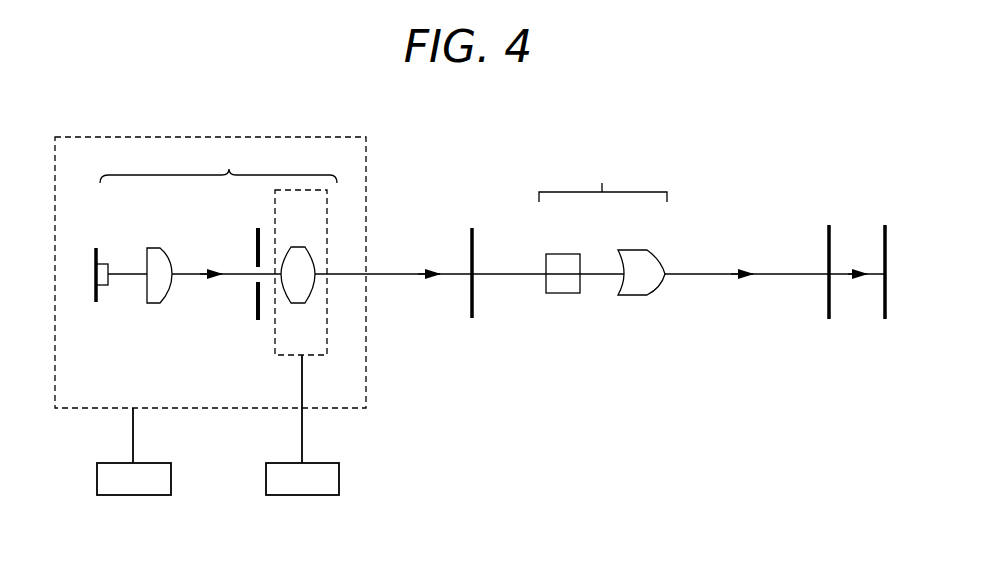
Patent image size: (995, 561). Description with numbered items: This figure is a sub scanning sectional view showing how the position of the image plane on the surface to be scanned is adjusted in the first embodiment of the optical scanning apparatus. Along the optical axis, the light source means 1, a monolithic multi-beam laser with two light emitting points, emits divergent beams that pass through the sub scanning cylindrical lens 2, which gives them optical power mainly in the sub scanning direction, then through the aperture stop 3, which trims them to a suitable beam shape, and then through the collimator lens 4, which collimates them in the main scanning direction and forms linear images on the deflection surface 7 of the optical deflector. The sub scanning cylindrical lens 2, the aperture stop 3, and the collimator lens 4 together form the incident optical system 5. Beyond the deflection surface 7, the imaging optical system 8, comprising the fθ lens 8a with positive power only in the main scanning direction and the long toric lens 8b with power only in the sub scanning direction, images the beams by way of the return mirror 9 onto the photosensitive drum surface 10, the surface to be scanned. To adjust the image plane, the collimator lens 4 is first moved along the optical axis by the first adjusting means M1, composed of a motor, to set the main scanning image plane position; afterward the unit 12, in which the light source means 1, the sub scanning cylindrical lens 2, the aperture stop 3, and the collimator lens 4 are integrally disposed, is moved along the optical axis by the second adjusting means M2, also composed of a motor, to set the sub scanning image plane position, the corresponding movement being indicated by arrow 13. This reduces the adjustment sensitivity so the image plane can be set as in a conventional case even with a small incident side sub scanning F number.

The light source means 1 is at (96, 250).
The sub scanning cylindrical lens 2 is at (152, 248).
The aperture stop 3 is at (256, 240).
The collimator lens 4 is at (297, 247).
The incident optical system 5 is at (218, 164).
The deflection surface 7 is at (470, 240).
The imaging optical system 8 is at (603, 180).
The fθ lens 8a is at (569, 254).
The long toric lens 8b is at (638, 250).
The return mirror 9 is at (828, 232).
The photosensitive drum surface 10 is at (884, 232).
The unit 12 is at (250, 368).
The movement of illumination unit 13 is at (290, 433).
The first adjusting means M1 is at (302, 425).
The second adjusting means M2 is at (134, 451).